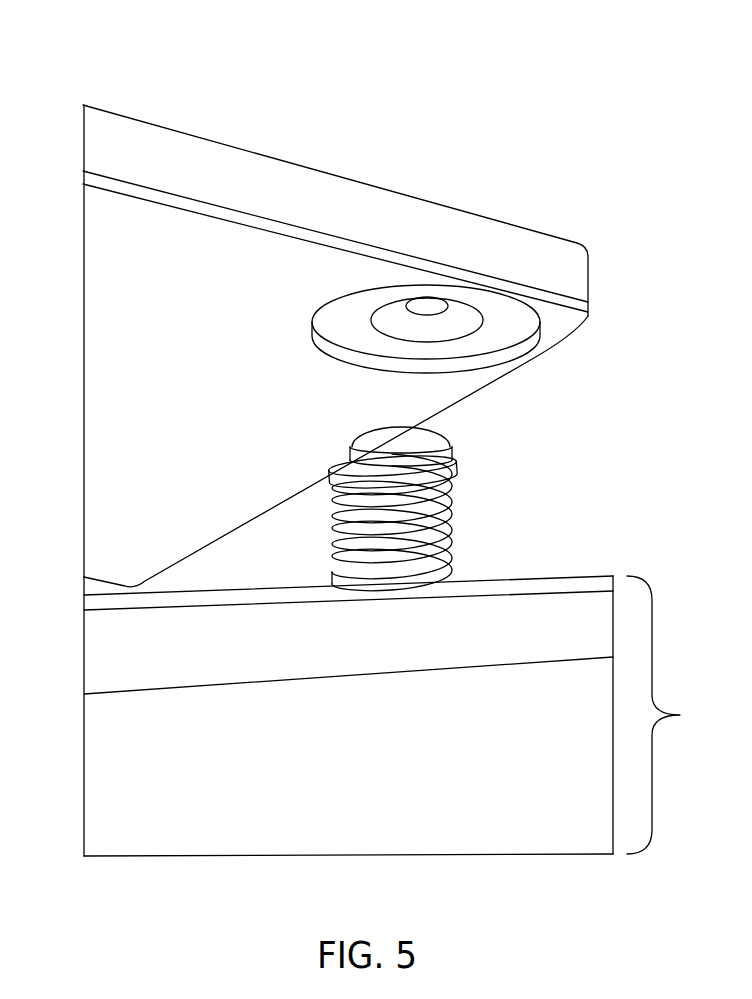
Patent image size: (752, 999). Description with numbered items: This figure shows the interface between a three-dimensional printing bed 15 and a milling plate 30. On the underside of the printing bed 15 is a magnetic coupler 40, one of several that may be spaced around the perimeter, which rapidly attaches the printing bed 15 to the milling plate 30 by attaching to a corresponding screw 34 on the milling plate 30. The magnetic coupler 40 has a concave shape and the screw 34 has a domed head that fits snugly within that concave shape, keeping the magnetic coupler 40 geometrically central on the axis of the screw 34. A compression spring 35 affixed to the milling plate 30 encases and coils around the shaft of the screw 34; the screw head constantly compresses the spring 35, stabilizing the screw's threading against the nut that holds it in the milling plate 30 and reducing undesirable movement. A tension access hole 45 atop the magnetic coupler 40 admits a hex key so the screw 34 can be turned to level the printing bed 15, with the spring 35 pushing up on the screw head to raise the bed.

The 3D printing bed 15 is at (348, 208).
The milling plate 30 is at (385, 642).
The screw 34 is at (447, 436).
The compression spring 35 is at (440, 505).
The magnetic coupler 40 is at (328, 342).
The tension access hole 45 is at (432, 305).